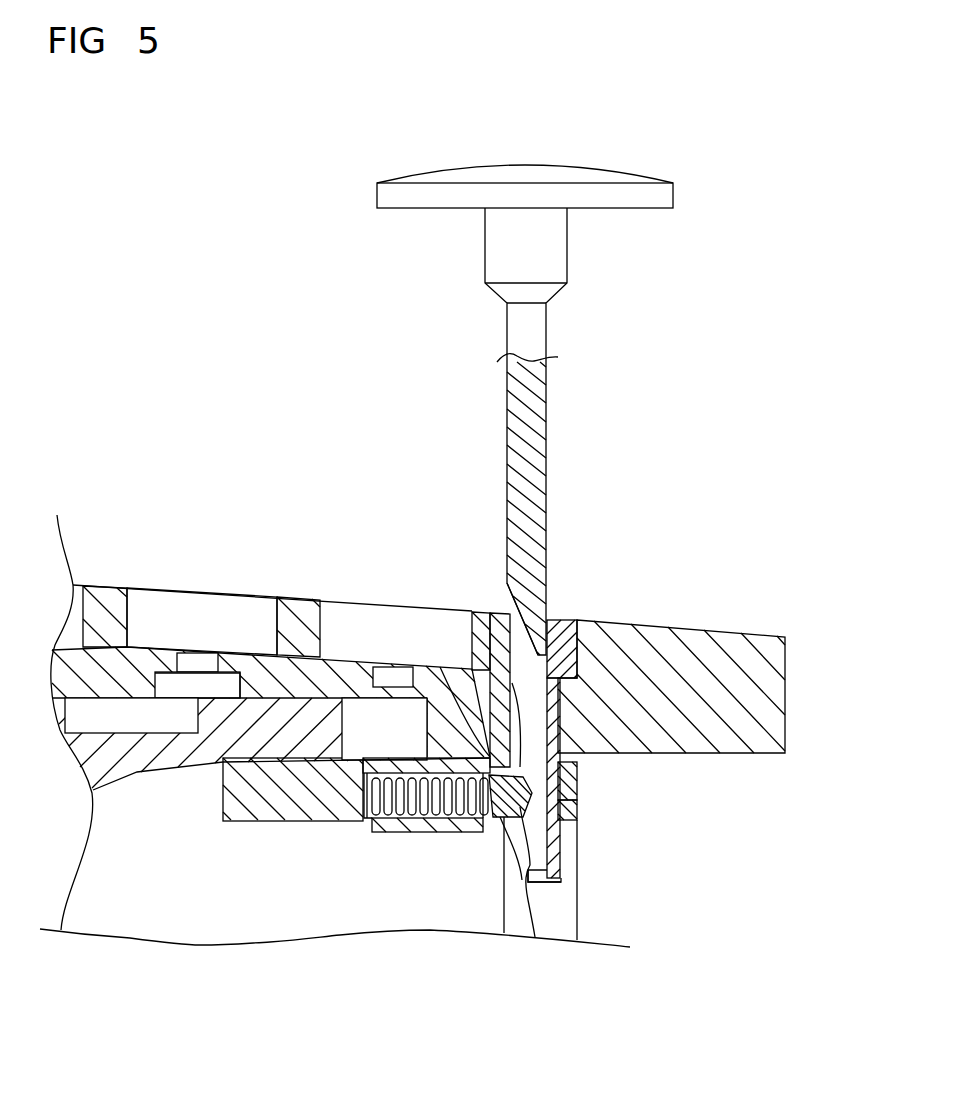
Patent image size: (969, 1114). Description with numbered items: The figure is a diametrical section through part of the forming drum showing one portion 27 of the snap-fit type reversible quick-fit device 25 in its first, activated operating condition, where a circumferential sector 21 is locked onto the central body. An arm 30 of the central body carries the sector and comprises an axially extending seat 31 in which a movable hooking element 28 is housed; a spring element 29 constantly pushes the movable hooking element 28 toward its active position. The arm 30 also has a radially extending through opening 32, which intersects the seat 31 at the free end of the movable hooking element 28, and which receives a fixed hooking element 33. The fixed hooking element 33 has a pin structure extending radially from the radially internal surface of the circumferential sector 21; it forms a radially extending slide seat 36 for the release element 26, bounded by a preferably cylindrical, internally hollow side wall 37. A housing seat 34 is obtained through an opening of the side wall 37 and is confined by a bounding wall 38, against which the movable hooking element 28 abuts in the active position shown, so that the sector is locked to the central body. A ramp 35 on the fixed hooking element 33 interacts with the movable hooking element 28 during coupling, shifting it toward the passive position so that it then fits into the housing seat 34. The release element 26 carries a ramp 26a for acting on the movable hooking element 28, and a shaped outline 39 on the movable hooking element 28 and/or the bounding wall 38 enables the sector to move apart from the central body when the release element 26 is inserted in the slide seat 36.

The circumferential sector 21 is at (298, 597).
The reversible quick-fit device 25 is at (352, 805).
The release element 26 is at (540, 407).
The ramp 26a is at (513, 598).
The portion of the snap-fit device 27 is at (703, 648).
The movable hooking element 28 is at (520, 807).
The spring element 29 is at (397, 810).
The arm 30 is at (262, 727).
The seat 31 is at (367, 800).
The opening 32 is at (498, 767).
The fixed hooking element 33 is at (562, 620).
The housing seat 34 is at (575, 770).
The ramp 35 is at (527, 883).
The slide seat 36 is at (535, 837).
The side wall 37 is at (552, 800).
The bounding wall 38 is at (490, 677).
The shaped outline 39 is at (500, 817).